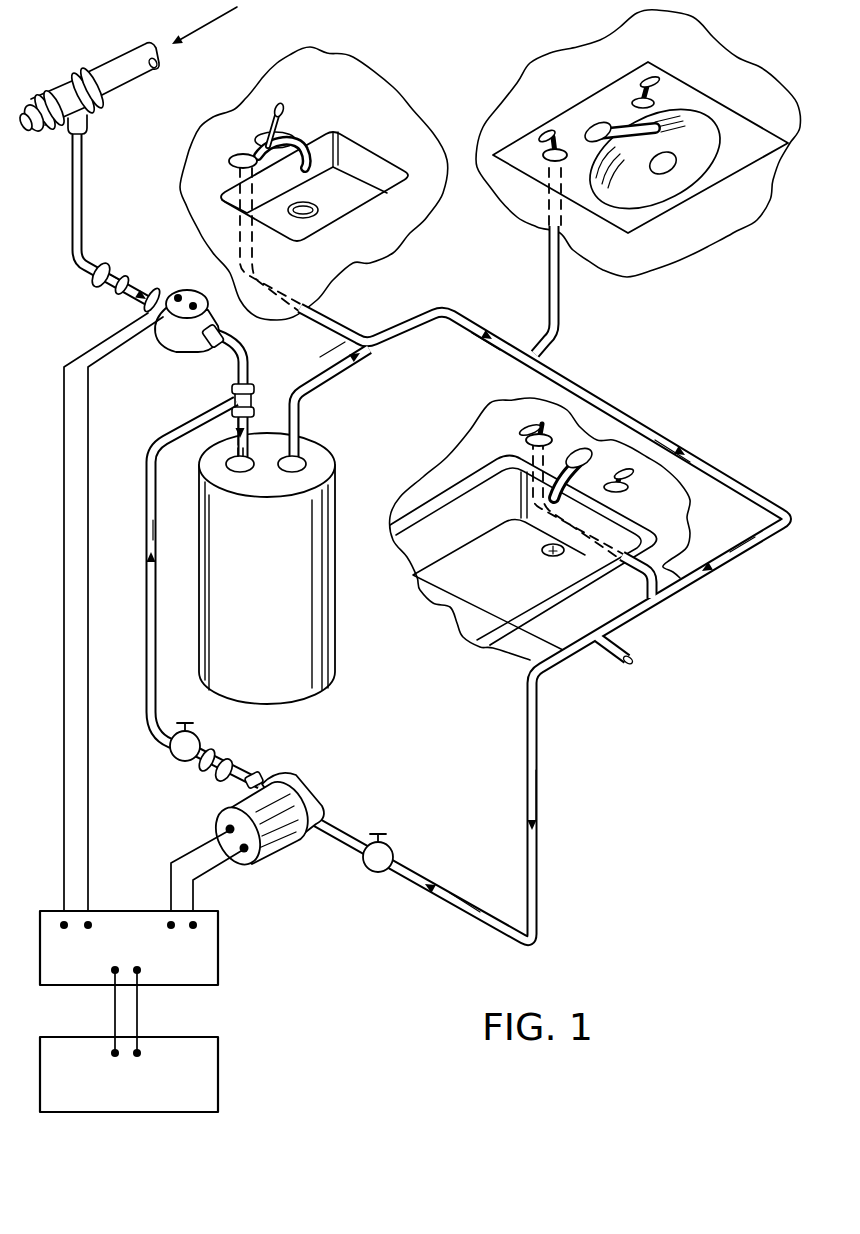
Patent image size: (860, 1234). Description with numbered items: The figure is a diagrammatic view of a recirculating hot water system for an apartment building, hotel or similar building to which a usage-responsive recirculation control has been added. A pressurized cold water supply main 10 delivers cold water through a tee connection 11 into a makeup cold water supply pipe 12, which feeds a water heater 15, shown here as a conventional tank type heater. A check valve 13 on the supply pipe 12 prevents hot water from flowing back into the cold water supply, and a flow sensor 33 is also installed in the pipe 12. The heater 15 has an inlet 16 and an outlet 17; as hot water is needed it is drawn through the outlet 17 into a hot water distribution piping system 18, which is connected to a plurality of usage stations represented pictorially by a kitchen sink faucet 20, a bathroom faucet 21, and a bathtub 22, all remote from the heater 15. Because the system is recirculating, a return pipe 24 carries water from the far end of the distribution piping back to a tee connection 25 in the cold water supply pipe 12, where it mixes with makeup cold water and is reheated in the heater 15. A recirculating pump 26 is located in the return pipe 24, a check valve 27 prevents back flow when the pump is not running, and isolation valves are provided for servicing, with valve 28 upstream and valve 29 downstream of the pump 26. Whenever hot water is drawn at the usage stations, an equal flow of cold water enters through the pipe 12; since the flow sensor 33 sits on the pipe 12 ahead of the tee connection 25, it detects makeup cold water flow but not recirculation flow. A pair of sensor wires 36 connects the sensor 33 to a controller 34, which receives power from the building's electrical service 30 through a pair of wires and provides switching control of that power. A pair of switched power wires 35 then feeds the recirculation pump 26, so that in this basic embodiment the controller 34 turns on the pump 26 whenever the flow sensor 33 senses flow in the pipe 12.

The pressurized cold water supply main 10 is at (113, 62).
The tee connection 11 is at (57, 97).
The makeup cold water supply pipe 12 is at (77, 193).
The check valve 13 is at (110, 268).
The water heater 15 is at (260, 567).
The inlet 16 is at (243, 467).
The outlet 17 is at (303, 457).
The hot water distribution piping system 18 is at (355, 378).
The kitchen sink faucet 20 is at (243, 155).
The bathroom faucet 21 is at (550, 133).
The bathtub 22 is at (540, 423).
The return pipe 24 is at (177, 427).
The tee connection 25 is at (233, 388).
The recirculating pump 26 is at (290, 792).
The check valve 27 is at (213, 780).
The isolation valve 28 is at (370, 872).
The isolation valve 29 is at (177, 760).
The building electrical service 30 is at (113, 1013).
The flow sensor 33 is at (197, 290).
The controller 34 is at (215, 975).
The switched power wires 35 is at (193, 887).
The sensor wires 36 is at (64, 533).